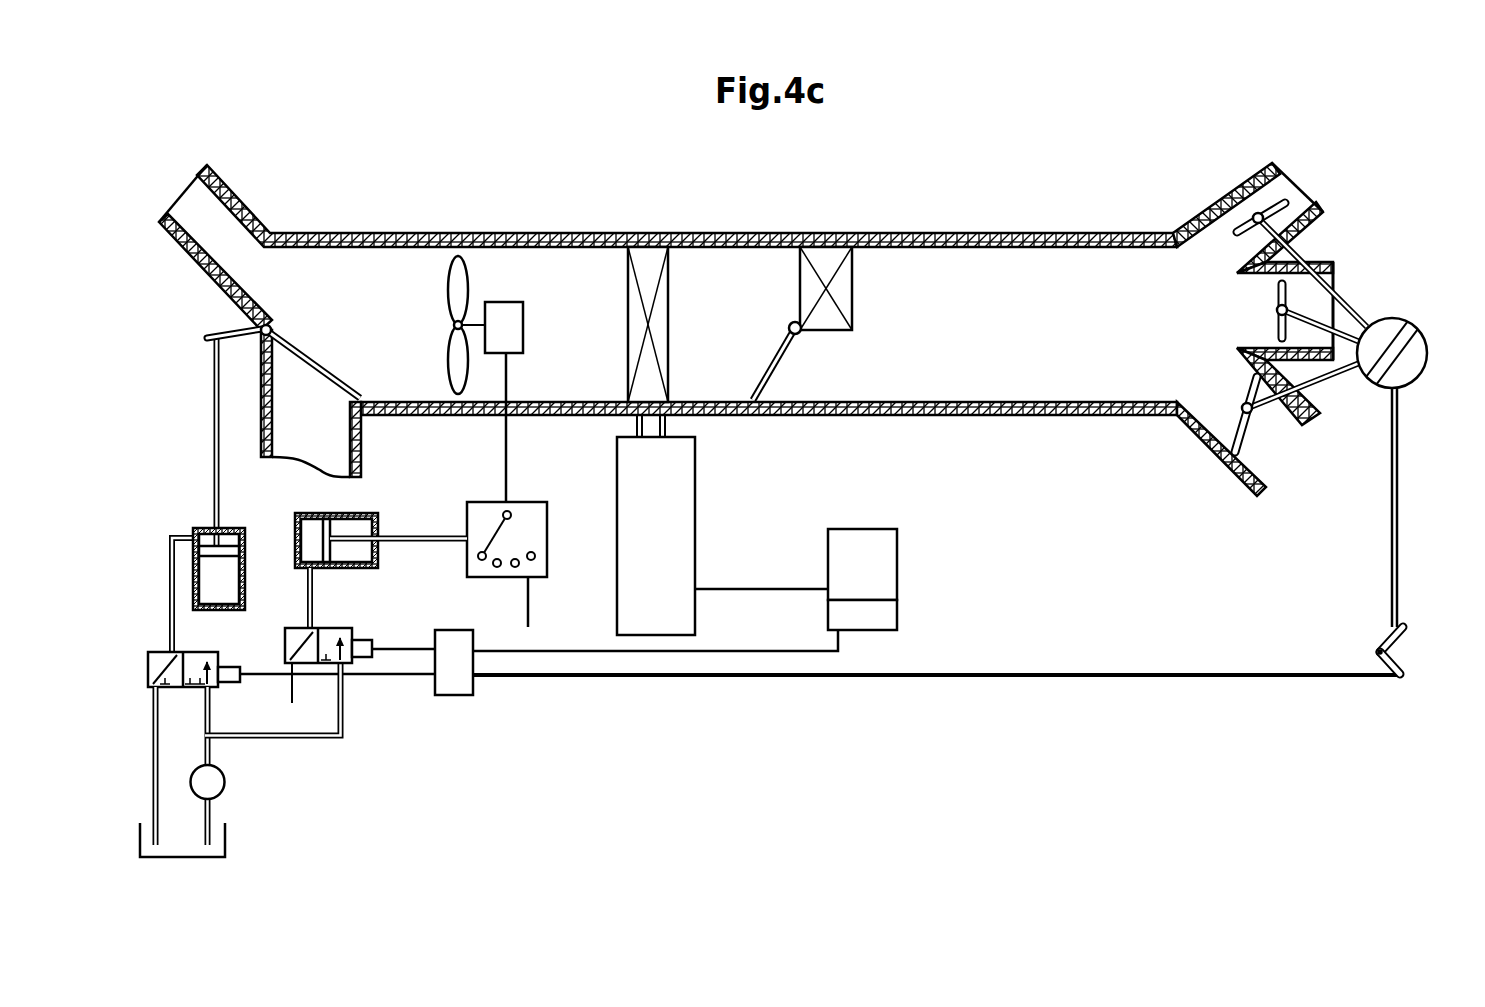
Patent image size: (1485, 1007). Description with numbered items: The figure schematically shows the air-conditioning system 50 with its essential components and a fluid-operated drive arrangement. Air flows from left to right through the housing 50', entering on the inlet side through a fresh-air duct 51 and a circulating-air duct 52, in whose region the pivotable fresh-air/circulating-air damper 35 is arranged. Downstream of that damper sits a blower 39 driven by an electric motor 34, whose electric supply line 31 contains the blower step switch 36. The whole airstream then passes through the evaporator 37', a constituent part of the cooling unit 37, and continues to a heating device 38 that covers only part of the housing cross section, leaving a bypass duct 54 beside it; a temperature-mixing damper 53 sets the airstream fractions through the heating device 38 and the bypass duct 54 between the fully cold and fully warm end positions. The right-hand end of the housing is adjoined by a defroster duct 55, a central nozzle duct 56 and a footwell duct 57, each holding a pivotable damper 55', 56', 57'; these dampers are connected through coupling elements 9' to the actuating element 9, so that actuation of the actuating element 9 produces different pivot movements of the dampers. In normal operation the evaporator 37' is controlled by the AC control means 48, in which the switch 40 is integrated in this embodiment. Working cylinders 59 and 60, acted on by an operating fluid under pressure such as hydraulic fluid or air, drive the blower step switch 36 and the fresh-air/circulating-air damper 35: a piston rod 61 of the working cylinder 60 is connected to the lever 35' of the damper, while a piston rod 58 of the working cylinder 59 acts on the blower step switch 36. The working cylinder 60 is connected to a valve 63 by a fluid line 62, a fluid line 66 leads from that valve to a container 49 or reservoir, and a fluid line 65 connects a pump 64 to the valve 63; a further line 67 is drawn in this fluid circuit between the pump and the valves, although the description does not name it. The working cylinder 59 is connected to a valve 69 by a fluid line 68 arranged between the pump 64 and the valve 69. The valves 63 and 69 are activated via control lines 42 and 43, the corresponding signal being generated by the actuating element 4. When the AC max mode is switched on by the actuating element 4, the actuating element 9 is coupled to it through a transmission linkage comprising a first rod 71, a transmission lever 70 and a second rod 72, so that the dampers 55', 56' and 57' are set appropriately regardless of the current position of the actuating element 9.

The actuating element 4 is at (468, 686).
The actuating element 9 is at (1418, 355).
The coupling elements 9′ is at (1352, 305).
The electric supply line 31 is at (508, 464).
The electric motor 34 is at (515, 326).
The fresh-air/circulating-air damper 35 is at (325, 350).
The lever 35′ is at (230, 330).
The blower step switch 36 is at (537, 535).
The cooling unit 37 is at (677, 475).
The evaporator 37′ is at (645, 256).
The heating device 38 is at (822, 258).
The blower 39 is at (488, 276).
The switch 40 is at (890, 618).
The control line 42 is at (406, 678).
The control line 43 is at (404, 644).
The AC control means 48 is at (887, 553).
The container 49 is at (226, 841).
The air-conditioning system 50 is at (687, 310).
The housing 50′ is at (920, 238).
The fresh-air duct 51 is at (225, 237).
The circulating-air duct 52 is at (333, 438).
The temperature-mixing damper 53 is at (789, 333).
The bypass duct 54 is at (833, 375).
The defroster duct 55 is at (1222, 222).
The damper 55′ is at (1296, 211).
The central nozzle duct 56 is at (1268, 293).
The damper 56′ is at (1276, 333).
The footwell duct 57 is at (1290, 425).
The damper 57′ is at (1250, 436).
The piston rod 58 is at (415, 534).
The working cylinder 59 is at (312, 502).
The working cylinder 60 is at (202, 513).
The piston rod 61 is at (213, 386).
The fluid line 62 is at (170, 572).
The valve 63 is at (215, 648).
The pump 64 is at (225, 785).
The fluid line 65 is at (212, 718).
The fluid line 66 is at (160, 712).
The connecting line 67 is at (313, 740).
The fluid line 68 is at (308, 600).
The valve 69 is at (341, 624).
The transmission lever 70 is at (1377, 643).
The first rod 71 is at (1390, 549).
The second rod 72 is at (1170, 673).